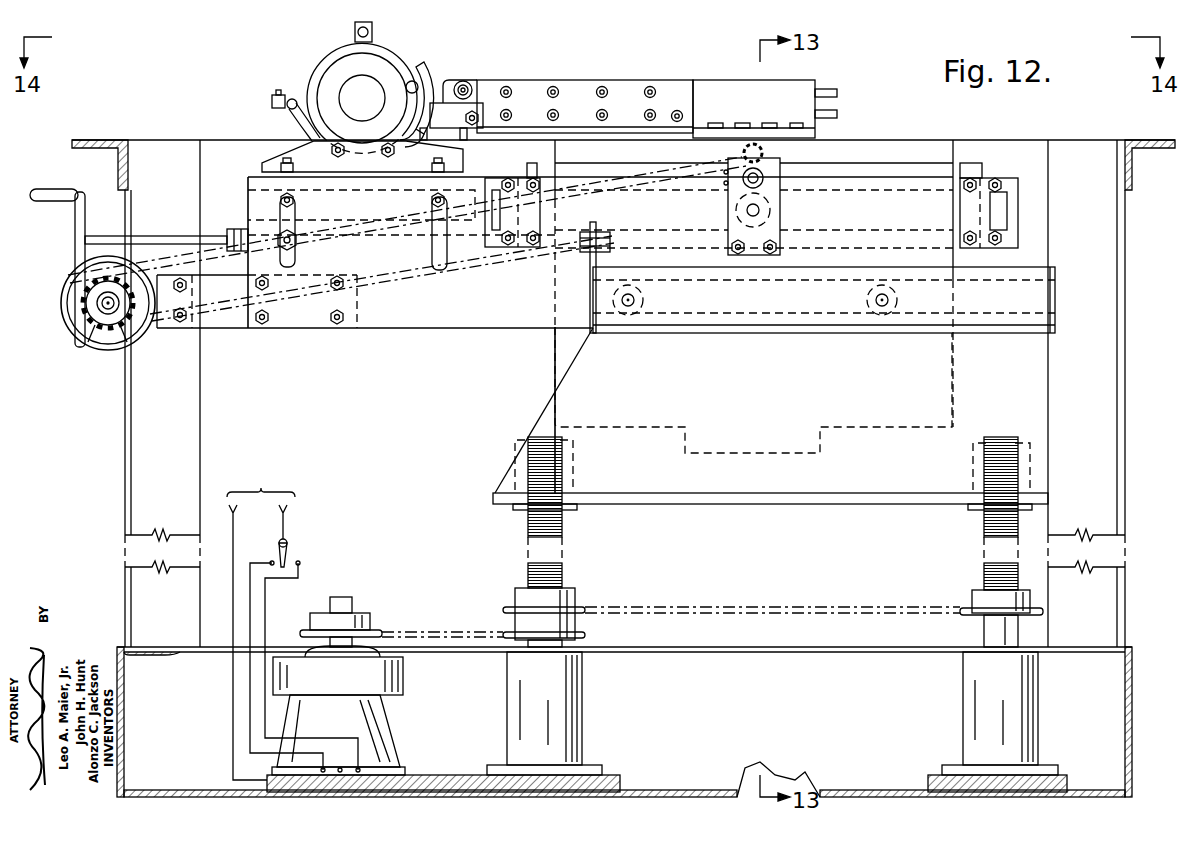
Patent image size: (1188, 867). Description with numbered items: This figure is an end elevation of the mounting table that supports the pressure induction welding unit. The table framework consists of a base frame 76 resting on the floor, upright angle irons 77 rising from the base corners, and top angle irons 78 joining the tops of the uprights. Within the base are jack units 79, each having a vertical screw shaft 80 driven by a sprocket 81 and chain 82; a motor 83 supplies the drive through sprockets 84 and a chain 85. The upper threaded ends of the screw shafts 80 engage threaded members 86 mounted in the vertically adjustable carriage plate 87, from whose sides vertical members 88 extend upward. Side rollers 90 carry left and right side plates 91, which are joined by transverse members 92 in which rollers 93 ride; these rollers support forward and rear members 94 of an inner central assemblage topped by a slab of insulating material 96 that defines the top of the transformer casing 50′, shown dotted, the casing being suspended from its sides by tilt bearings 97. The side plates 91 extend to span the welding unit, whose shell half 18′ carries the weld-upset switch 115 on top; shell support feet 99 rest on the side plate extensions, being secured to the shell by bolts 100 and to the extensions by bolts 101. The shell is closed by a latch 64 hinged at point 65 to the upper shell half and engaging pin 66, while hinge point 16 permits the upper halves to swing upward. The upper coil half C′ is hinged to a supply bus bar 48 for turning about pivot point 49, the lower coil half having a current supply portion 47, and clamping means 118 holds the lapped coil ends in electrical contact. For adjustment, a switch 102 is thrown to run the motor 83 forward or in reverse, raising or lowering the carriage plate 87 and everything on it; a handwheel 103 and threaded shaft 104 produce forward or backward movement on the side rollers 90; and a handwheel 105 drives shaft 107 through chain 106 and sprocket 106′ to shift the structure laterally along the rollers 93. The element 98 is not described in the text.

The upper shell half 18′ is at (330, 54).
The weld-upset switch 115 is at (372, 32).
The upper coil half C′ is at (428, 78).
The pivot point 49 is at (463, 81).
The supply bus bar 48 is at (486, 88).
The clamping means 118 is at (272, 100).
The hinge point 65 is at (405, 86).
The pin 66 is at (400, 104).
The hinge point 16 is at (290, 110).
The latch 64 is at (412, 119).
The bolts 100 is at (362, 151).
The current supply portion 47 is at (467, 130).
The shell support feet 99 is at (262, 165).
The bolts 101 is at (425, 174).
The slide 98 is at (248, 207).
The handwheel 103 is at (72, 223).
The threaded shaft 104 is at (368, 250).
The handwheel 105 is at (78, 337).
The chain 106 is at (418, 280).
The sprocket 106′ is at (727, 178).
The shaft 107 is at (765, 163).
The tilt bearings 97 is at (780, 211).
The top slab of insulating material 96 is at (885, 148).
The forward and rear members 94 is at (533, 170).
The rollers 93 is at (507, 195).
The transverse members 92 is at (483, 240).
The side plates 91 is at (400, 328).
The side rollers 90 is at (645, 299).
The casing 50′ is at (553, 370).
The vertical members 88 is at (537, 418).
The carriage plate 87 is at (785, 493).
The threaded members 86 is at (575, 478).
The screw shaft 80 is at (528, 527).
The sprocket 81 is at (515, 598).
The chain 82 is at (765, 606).
The chain 85 is at (480, 630).
The sprockets 84 is at (300, 632).
The motor 83 is at (403, 676).
The jack units 79 is at (582, 722).
The base frame 76 is at (1132, 722).
The upright angle irons 77 is at (125, 498).
The top angle irons 78 is at (118, 160).
The switch 102 is at (290, 540).